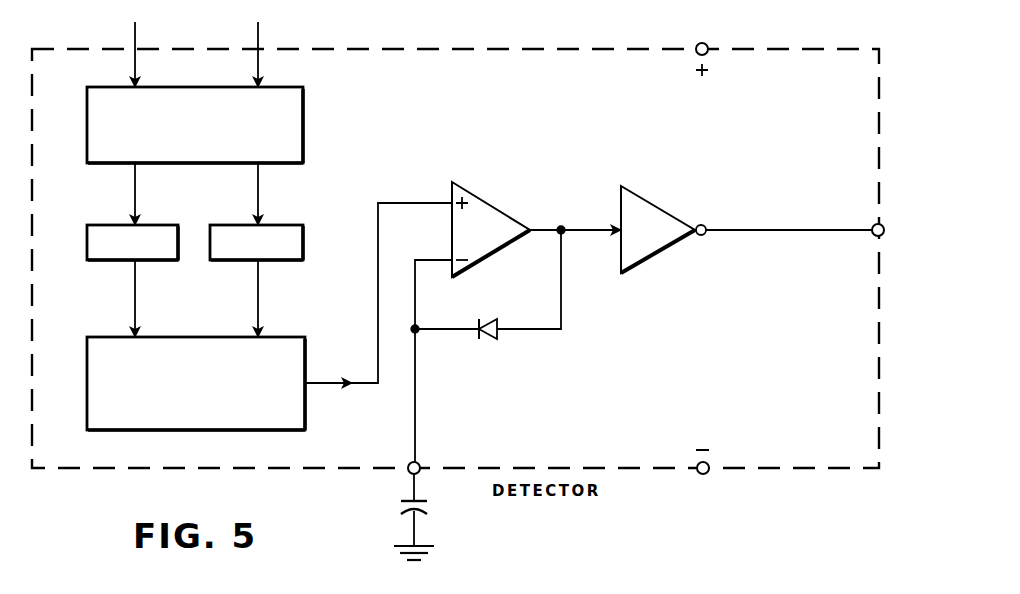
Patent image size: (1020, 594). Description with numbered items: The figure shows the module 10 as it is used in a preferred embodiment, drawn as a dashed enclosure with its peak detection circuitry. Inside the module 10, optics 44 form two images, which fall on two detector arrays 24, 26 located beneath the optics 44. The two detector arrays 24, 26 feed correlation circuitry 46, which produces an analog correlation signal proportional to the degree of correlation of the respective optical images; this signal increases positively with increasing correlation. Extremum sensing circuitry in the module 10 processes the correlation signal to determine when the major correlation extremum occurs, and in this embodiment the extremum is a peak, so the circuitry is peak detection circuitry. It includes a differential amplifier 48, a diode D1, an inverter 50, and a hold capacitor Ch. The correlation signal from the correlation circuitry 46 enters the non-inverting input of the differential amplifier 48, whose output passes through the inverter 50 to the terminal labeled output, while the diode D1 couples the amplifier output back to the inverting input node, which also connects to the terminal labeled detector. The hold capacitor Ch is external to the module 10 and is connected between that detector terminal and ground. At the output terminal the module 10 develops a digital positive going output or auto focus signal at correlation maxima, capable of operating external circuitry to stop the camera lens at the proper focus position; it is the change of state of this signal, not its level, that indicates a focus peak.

The module 10 is at (492, 49).
The detector array 24 is at (150, 225).
The detector array 26 is at (277, 225).
The optics 44 is at (305, 117).
The correlation circuitry 46 is at (283, 337).
The differential amplifier 48 is at (483, 200).
The inverter 50 is at (648, 200).
The diode D1 is at (481, 322).
The hold capacitor Ch is at (426, 517).